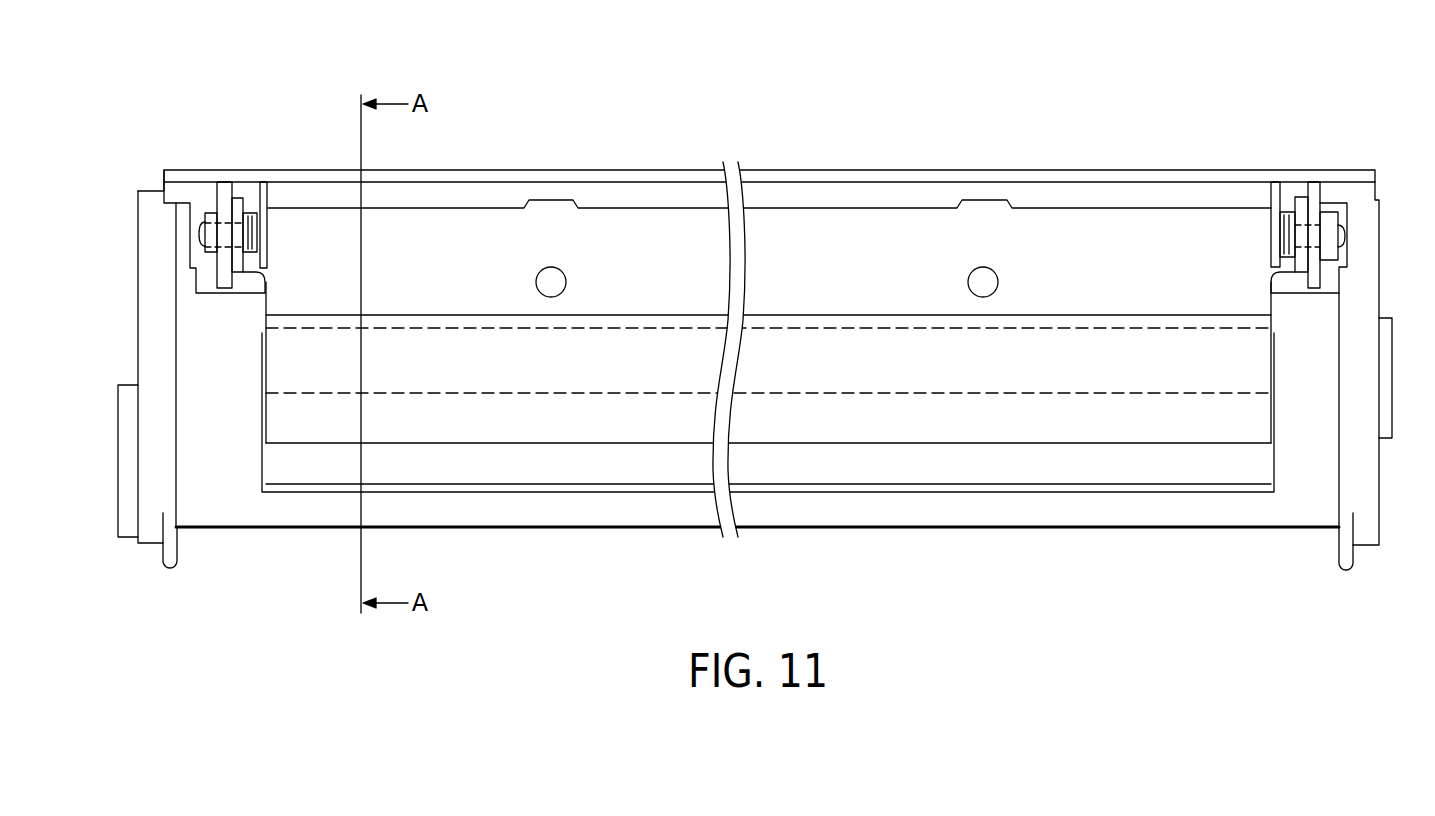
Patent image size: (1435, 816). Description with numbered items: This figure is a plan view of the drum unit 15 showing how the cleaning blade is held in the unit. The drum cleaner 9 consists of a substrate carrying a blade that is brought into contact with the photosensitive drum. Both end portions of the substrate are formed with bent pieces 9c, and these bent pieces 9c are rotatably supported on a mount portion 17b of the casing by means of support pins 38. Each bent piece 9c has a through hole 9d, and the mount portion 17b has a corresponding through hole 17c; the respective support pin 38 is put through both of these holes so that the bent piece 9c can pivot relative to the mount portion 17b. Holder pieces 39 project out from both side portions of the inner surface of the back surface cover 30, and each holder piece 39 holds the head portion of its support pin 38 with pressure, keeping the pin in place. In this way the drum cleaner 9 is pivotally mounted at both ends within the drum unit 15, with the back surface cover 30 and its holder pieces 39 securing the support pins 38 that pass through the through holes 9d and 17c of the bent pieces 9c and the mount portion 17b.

The drum cleaner 9 is at (1118, 212).
The bent piece 9c is at (237, 198).
The through hole 9d is at (220, 222).
The drum unit 15 is at (998, 133).
The mount portion 17b is at (223, 289).
The through hole 17c is at (220, 224).
The back surface cover 30 is at (858, 169).
The support pin 38 is at (203, 233).
The holder piece 39 is at (263, 247).